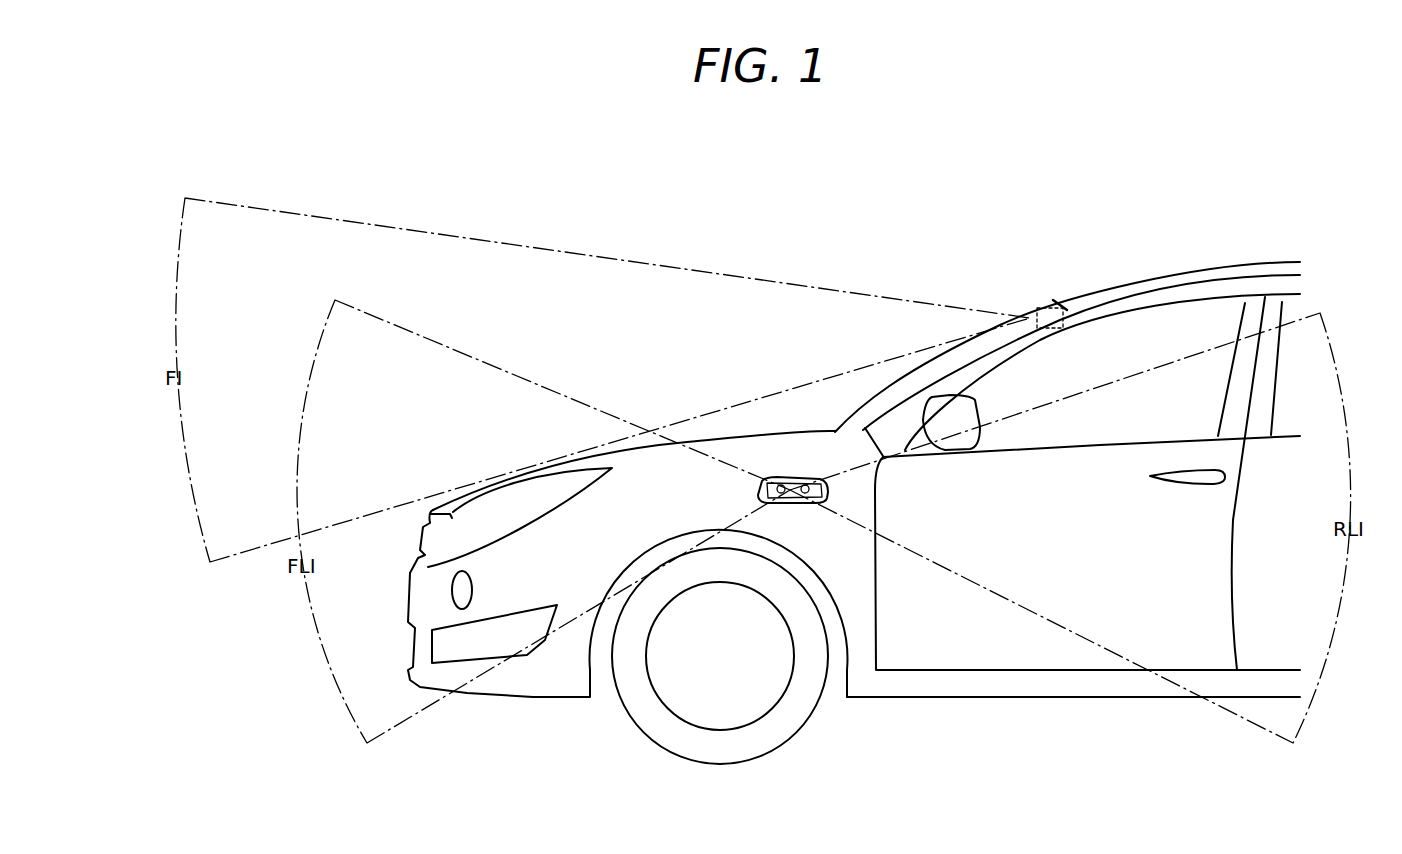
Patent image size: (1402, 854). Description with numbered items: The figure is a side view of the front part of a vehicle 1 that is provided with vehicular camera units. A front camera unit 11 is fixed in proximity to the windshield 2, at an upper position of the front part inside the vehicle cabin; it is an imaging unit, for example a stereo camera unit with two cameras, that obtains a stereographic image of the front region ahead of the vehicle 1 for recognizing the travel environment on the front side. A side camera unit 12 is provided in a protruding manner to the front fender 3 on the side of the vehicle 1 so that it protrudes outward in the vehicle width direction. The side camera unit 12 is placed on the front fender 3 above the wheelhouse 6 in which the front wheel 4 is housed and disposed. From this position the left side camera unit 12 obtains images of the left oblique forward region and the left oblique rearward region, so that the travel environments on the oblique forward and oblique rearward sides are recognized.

The vehicle 1 is at (1166, 229).
The windshield 2 is at (1030, 318).
The front camera unit 11 is at (1058, 296).
The front fender 3 is at (779, 455).
The side camera unit 12 is at (800, 477).
The front wheel 4 is at (722, 765).
The wheelhouse 6 is at (832, 690).